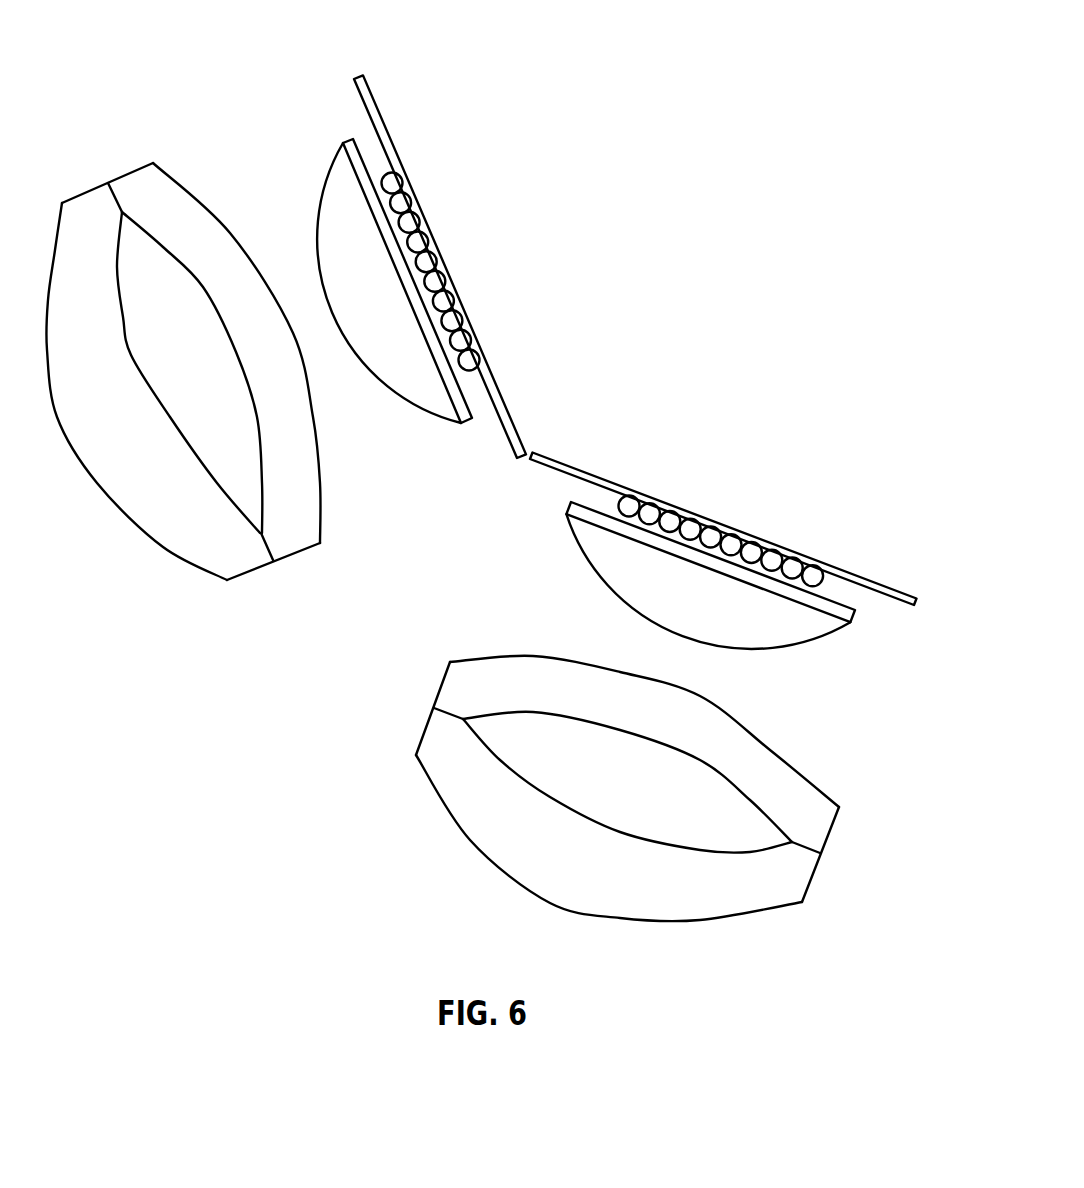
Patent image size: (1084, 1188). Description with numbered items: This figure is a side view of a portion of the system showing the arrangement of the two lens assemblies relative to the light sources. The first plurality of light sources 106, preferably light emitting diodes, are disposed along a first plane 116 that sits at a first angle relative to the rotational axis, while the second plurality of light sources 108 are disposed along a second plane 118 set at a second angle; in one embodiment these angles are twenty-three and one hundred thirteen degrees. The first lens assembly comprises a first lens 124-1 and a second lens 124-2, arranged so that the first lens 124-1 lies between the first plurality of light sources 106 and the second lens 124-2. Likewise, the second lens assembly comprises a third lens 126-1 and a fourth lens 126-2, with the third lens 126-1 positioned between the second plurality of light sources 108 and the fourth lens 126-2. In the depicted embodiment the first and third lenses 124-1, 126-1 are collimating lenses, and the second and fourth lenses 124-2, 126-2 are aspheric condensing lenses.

The first plurality of light sources 106 is at (361, 129).
The second plurality of light sources 108 is at (860, 602).
The first plane 116 is at (398, 175).
The second plane 118 is at (808, 557).
The first lens 124-1 is at (340, 192).
The second lens 124-2 is at (108, 183).
The third lens 126-1 is at (804, 648).
The fourth lens 126-2 is at (820, 853).